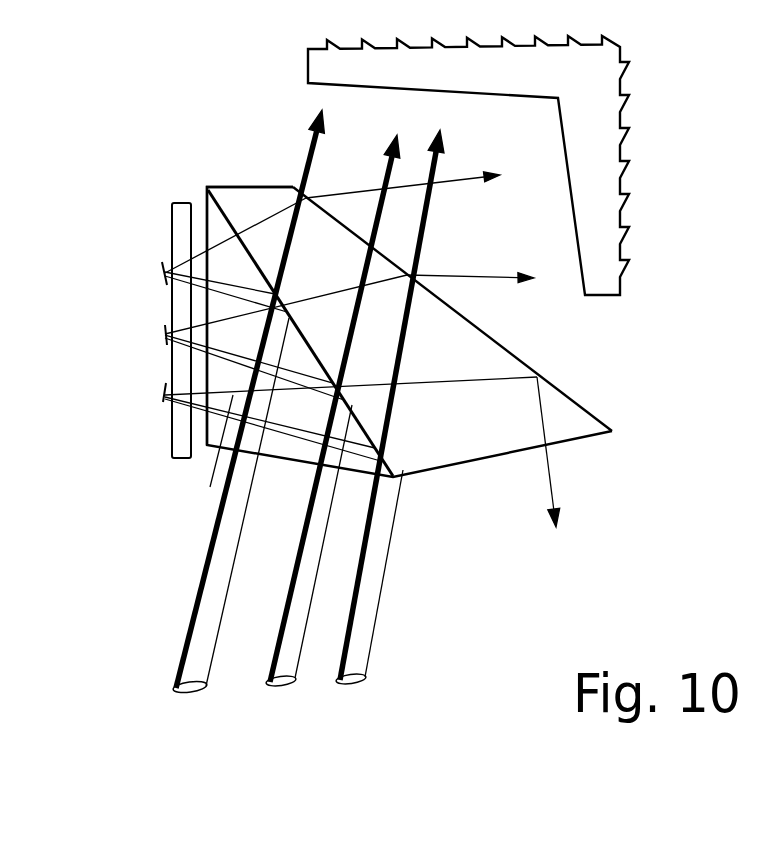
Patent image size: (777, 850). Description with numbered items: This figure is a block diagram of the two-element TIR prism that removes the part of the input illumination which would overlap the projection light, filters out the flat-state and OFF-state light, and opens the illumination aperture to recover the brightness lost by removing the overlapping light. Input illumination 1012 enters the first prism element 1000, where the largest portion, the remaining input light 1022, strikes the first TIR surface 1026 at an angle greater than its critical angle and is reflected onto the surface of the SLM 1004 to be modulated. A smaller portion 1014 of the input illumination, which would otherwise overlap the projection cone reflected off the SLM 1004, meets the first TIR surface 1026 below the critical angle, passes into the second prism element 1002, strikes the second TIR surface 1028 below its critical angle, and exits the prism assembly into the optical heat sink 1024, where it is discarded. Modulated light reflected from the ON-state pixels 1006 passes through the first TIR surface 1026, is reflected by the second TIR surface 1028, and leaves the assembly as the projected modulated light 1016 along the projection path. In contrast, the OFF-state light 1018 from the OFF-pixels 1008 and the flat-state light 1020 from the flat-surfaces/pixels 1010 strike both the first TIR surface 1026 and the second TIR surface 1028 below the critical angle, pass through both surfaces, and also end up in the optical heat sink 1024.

The first prism element 1000 is at (203, 205).
The second prism element 1002 is at (483, 463).
The SLM 1004 is at (170, 230).
The ON-state pixels 1006 is at (162, 395).
The OFF-pixels 1008 is at (160, 270).
The flat-surfaces/pixels 1010 is at (163, 338).
The input illumination 1012 is at (196, 693).
The removed portion of input light 1014 is at (160, 650).
The projected modulated light 1016 is at (563, 523).
The OFF-state light 1018 is at (465, 182).
The flat-state light 1020 is at (467, 274).
The remaining input light 1022 is at (210, 487).
The optical heat sink 1024 is at (620, 55).
The first TIR surface 1026 is at (218, 186).
The second TIR surface 1028 is at (591, 413).